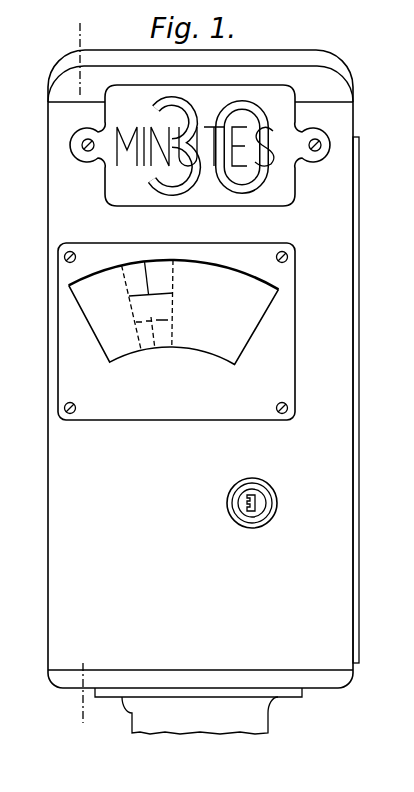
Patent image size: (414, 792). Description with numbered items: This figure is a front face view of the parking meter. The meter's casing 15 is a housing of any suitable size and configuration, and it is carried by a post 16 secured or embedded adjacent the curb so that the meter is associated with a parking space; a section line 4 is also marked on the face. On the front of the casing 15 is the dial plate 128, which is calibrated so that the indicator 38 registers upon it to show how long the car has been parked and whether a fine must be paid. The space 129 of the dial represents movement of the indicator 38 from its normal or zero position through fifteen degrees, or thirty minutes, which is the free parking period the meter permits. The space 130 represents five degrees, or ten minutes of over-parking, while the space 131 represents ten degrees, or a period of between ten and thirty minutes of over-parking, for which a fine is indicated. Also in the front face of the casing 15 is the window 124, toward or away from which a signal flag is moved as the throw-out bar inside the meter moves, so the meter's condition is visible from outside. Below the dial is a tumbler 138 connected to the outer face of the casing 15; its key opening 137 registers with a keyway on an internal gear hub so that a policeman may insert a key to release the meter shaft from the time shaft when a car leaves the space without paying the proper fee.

The section line 4- 4 is at (80, 23).
The casing 15 is at (342, 610).
The post 16 is at (262, 716).
The indicator 38 is at (103, 340).
The window 124 is at (246, 345).
The dial plate 128 is at (205, 260).
The space 129 is at (89, 280).
The space 130 is at (124, 268).
The space 131 is at (150, 265).
The key opening 137 is at (258, 517).
The tumbler 138 is at (258, 492).